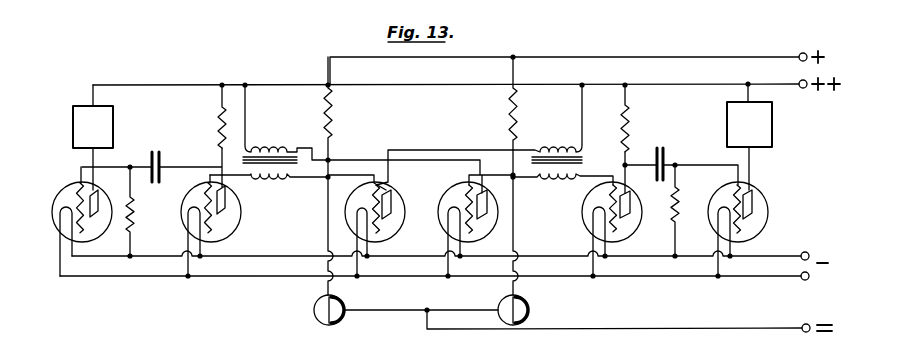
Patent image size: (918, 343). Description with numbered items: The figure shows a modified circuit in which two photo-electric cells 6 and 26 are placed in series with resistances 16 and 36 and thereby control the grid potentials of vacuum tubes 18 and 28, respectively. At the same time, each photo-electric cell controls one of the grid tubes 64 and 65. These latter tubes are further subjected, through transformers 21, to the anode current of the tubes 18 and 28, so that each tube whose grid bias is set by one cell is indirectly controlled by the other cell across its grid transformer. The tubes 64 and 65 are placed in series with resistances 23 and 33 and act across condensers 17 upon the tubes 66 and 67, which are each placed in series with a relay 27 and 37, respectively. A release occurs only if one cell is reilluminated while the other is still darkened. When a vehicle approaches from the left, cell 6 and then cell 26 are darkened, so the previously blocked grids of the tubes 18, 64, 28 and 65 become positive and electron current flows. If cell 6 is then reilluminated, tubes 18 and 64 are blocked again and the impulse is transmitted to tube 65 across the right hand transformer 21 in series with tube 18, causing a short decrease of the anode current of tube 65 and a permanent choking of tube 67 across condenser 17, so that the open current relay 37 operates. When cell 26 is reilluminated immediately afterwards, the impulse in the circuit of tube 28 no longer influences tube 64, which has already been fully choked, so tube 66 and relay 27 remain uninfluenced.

The photo-electric cell 6 is at (313, 310).
The photo-electric cell 26 is at (532, 302).
The resistance 16 is at (333, 118).
The resistance 36 is at (508, 118).
The condenser 17 is at (159, 150).
The vacuum tube 18 is at (400, 204).
The vacuum tube 28 is at (440, 221).
The transformer 21 is at (275, 142).
The resistance 23 is at (217, 120).
The resistance 33 is at (630, 118).
The relay 27 is at (93, 127).
The relay 37 is at (749, 124).
The grid tube 64 is at (182, 216).
The grid tube 65 is at (637, 227).
The tube 66 is at (72, 181).
The tube 67 is at (753, 229).